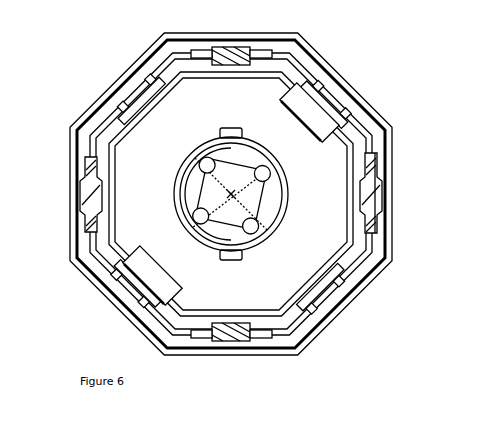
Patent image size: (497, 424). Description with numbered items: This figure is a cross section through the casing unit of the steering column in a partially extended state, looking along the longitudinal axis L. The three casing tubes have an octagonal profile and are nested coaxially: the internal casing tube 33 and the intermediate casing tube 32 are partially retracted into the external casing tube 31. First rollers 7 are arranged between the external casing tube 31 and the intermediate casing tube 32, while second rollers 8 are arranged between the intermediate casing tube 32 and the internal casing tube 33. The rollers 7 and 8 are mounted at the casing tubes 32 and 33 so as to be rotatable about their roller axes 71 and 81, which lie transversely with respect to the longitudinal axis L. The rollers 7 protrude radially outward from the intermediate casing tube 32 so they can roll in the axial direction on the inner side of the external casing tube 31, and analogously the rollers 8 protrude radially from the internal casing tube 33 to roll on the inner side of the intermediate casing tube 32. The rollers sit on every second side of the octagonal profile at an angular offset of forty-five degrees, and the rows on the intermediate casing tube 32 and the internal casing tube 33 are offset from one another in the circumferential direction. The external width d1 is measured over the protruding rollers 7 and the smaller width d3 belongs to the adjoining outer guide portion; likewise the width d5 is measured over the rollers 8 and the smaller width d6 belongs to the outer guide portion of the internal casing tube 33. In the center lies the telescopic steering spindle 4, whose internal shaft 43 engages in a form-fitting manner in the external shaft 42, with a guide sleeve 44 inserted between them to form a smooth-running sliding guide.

The external width of outer bearing portion d1 is at (228, 65).
The external width of outer guide portion d3 is at (277, 40).
The external width of outer bearing portion d5 is at (335, 65).
The external width of outer guide portion d6 is at (361, 97).
The external casing tube 31 is at (383, 114).
The intermediate casing tube 32 is at (388, 132).
The internal casing tube 33 is at (391, 158).
The first rollers 7 is at (393, 188).
The roller axes 71 is at (392, 198).
The roller axes 81 is at (389, 253).
The second rollers 8 is at (362, 295).
The internal shaft 43 is at (201, 169).
The longitudinal axis L is at (229, 193).
The guide sleeve 44 is at (190, 198).
The external shaft 42 is at (172, 222).
The steering spindle 4 is at (172, 227).